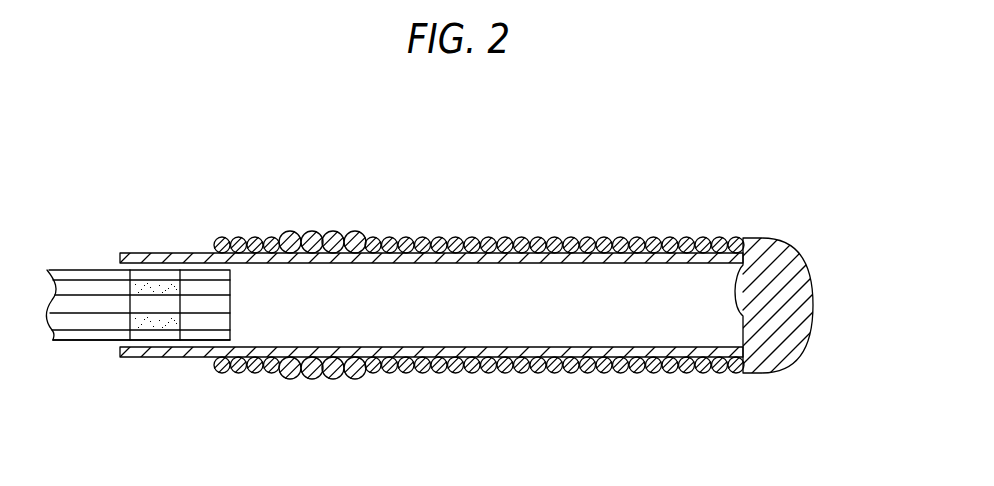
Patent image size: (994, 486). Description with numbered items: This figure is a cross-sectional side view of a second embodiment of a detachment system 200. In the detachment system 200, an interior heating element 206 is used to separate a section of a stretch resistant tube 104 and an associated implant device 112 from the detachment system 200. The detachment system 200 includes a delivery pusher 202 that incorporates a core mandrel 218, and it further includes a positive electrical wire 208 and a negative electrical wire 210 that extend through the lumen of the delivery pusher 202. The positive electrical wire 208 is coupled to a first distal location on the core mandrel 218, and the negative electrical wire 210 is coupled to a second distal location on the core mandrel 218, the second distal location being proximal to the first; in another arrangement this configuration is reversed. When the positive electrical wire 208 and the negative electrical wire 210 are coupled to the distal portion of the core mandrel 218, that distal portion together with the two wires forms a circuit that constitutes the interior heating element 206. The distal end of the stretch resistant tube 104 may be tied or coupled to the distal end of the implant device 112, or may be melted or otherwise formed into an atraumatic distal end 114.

The detachment system 200 is at (290, 150).
The delivery pusher 202 is at (82, 272).
The stretch resistant tube 104 is at (160, 253).
The implant device 112 is at (555, 235).
The atraumatic distal end 114 is at (802, 265).
The core mandrel 218 is at (85, 293).
The positive electrical wire 208 is at (117, 280).
The negative electrical wire 210 is at (113, 328).
The interior heating element 206 is at (198, 335).